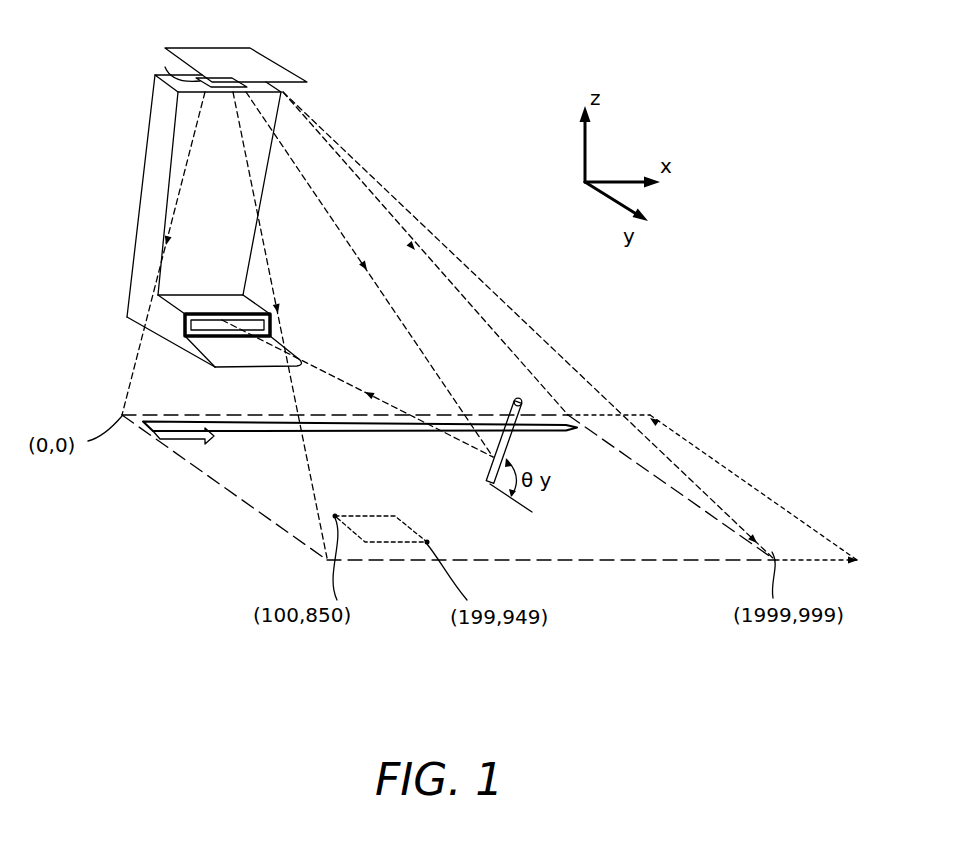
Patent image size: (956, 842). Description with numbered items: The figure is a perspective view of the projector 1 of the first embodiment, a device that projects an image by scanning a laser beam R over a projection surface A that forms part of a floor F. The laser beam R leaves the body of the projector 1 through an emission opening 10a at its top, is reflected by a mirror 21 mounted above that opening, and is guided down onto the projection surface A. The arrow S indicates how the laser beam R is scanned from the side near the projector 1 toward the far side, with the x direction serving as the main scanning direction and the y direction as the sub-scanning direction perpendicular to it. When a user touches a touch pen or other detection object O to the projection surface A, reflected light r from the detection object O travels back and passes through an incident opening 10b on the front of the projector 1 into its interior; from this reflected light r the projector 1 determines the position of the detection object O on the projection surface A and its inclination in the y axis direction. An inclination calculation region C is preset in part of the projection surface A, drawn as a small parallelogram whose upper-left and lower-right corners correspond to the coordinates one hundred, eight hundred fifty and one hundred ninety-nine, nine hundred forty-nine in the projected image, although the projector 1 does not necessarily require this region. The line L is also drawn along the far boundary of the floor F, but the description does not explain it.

The projector 1 is at (121, 137).
The emission opening 10a is at (170, 64).
The incident opening 10b is at (262, 326).
The mirror 21 is at (273, 60).
The laser beam R is at (424, 205).
The reflected light r is at (425, 436).
The arrow S is at (178, 452).
The detection object O is at (515, 404).
The floor F is at (622, 627).
The projection surface A is at (284, 536).
The field boundary line L is at (753, 487).
The inclination calculation region C is at (397, 545).